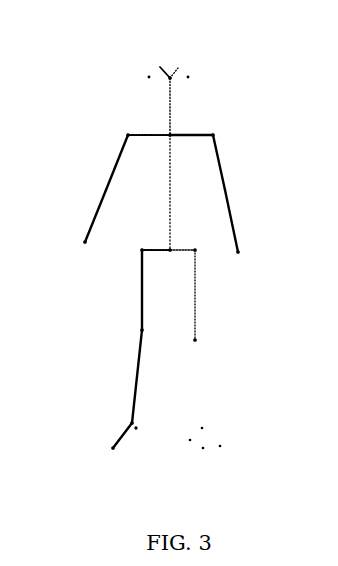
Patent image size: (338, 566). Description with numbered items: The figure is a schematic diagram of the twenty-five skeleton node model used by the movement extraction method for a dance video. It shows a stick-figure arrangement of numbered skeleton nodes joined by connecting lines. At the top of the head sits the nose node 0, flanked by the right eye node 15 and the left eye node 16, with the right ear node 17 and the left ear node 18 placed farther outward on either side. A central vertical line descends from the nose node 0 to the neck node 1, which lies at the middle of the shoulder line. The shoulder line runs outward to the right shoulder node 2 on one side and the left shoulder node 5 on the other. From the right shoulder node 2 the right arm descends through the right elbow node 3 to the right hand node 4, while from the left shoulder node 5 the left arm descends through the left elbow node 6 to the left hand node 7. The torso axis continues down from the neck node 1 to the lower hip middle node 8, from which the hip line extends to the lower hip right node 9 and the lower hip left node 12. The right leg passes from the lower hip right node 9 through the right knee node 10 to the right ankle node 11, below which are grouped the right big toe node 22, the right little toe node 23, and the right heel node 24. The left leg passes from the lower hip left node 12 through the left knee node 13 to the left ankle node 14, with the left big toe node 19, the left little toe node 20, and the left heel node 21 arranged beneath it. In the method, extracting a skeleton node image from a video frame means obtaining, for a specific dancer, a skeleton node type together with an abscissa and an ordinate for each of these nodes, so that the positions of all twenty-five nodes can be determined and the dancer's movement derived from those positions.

The nose node 0 is at (175, 106).
The neck node 1 is at (175, 192).
The right shoulder node 2 is at (141, 133).
The right elbow node 3 is at (110, 166).
The right hand node 4 is at (87, 220).
The left shoulder node 5 is at (198, 135).
The left elbow node 6 is at (228, 166).
The left hand node 7 is at (241, 222).
The lower hip middle node 8 is at (182, 243).
The lower hip right node 9 is at (147, 245).
The right knee node 10 is at (131, 296).
The right ankle node 11 is at (126, 378).
The lower hip left node 12 is at (204, 294).
The left knee node 13 is at (205, 340).
The left ankle node 14 is at (210, 422).
The right eye node 15 is at (158, 67).
The left eye node 16 is at (180, 67).
The right ear node 17 is at (139, 83).
The left ear node 18 is at (196, 83).
The left big toe node 19 is at (194, 454).
The left little toe node 20 is at (228, 443).
The left heel node 21 is at (181, 435).
The right big toe node 22 is at (127, 443).
The right little toe node 23 is at (102, 442).
The right heel node 24 is at (145, 432).